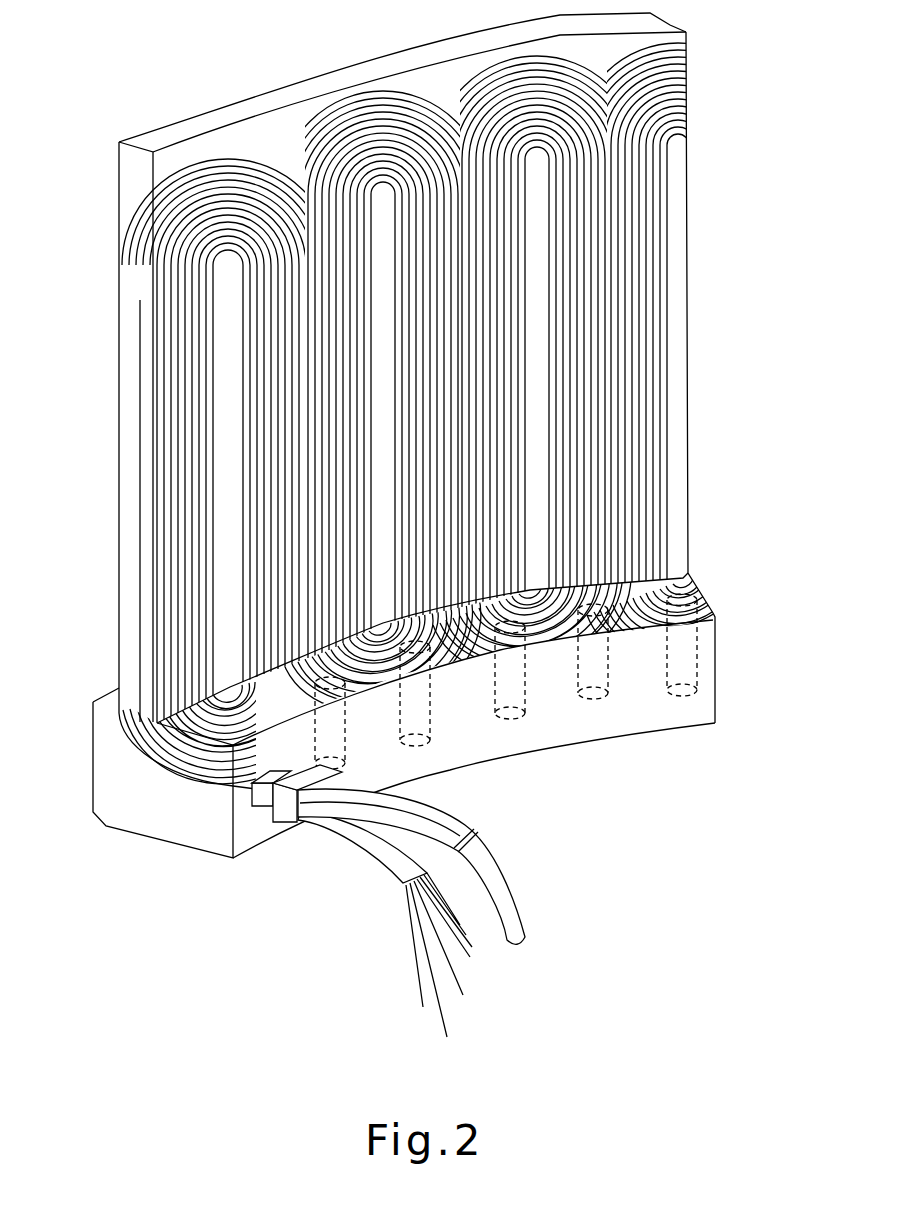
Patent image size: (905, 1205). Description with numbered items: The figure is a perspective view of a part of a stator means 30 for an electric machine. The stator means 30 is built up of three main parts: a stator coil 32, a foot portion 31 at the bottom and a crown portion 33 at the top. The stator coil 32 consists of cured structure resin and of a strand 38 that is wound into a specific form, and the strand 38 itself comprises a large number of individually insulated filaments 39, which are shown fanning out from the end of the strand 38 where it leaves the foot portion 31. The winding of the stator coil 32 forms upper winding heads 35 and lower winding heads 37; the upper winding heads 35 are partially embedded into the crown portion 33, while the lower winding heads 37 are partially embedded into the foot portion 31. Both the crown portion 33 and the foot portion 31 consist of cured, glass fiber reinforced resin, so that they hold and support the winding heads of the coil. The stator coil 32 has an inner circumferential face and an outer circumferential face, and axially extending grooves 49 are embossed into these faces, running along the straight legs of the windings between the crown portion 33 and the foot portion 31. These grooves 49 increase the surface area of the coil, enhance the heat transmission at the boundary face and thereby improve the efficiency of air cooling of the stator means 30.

The stator means 30 is at (707, 148).
The foot portion 31 is at (157, 820).
The stator coil 32 is at (132, 353).
The crown portion 33 is at (187, 118).
The upper winding heads 35 is at (347, 100).
The lower winding heads 37 is at (550, 663).
The strand 38 is at (348, 835).
The filaments 39 is at (430, 933).
The grooves 49 is at (530, 227).